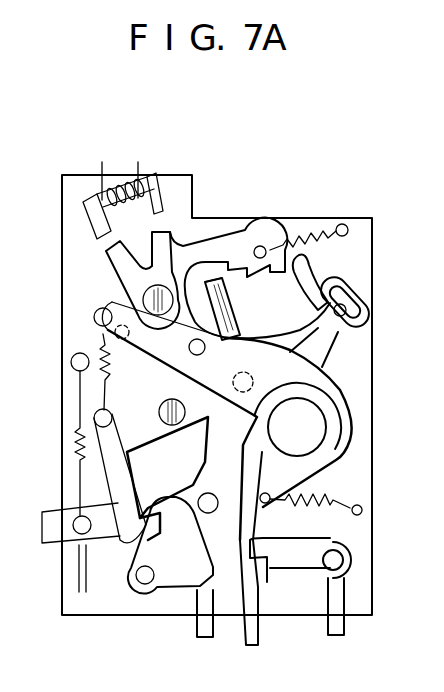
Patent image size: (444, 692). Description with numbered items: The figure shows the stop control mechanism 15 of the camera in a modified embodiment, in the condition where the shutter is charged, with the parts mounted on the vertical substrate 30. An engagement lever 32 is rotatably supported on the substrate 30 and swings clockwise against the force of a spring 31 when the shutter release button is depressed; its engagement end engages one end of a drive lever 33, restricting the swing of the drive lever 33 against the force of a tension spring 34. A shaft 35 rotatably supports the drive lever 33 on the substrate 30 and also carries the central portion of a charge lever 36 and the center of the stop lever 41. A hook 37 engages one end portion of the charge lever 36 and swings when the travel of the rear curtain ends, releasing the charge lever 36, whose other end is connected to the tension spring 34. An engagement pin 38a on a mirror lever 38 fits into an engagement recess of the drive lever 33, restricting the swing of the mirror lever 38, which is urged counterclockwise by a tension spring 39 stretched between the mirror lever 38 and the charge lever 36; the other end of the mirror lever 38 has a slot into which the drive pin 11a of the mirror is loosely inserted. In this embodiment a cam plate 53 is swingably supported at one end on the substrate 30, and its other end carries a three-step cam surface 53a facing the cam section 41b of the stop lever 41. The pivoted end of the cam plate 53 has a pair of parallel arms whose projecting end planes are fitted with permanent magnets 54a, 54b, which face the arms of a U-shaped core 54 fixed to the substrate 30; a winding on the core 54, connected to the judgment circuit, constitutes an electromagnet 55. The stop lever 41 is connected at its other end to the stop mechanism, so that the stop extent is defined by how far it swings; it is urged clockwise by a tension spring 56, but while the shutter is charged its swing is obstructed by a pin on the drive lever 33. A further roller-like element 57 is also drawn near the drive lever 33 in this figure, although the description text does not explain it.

The stop control mechanism 15 is at (357, 192).
The substrate 30 is at (373, 403).
The U-shaped core 54 is at (157, 187).
The electromagnet 55 is at (88, 205).
The permanent magnet 54a is at (108, 253).
The permanent magnet 54b is at (231, 238).
The cam plate 53 is at (243, 228).
The 3-step cam surface 53a is at (252, 243).
The stop lever 41 is at (250, 322).
The cam section 41b is at (236, 292).
The drive pin 11a is at (352, 298).
The mirror lever 38 is at (330, 358).
The engagement pin 38a is at (222, 383).
The tension spring 34 is at (90, 345).
The tension spring 56 is at (78, 444).
The drive lever 33 is at (100, 474).
The tension spring 39 is at (172, 478).
The roller 57 is at (162, 407).
The shaft 35 is at (322, 468).
The charge lever 36 is at (268, 513).
The hook 37 is at (348, 632).
The spring 31 is at (170, 556).
The engagement lever 32 is at (197, 630).